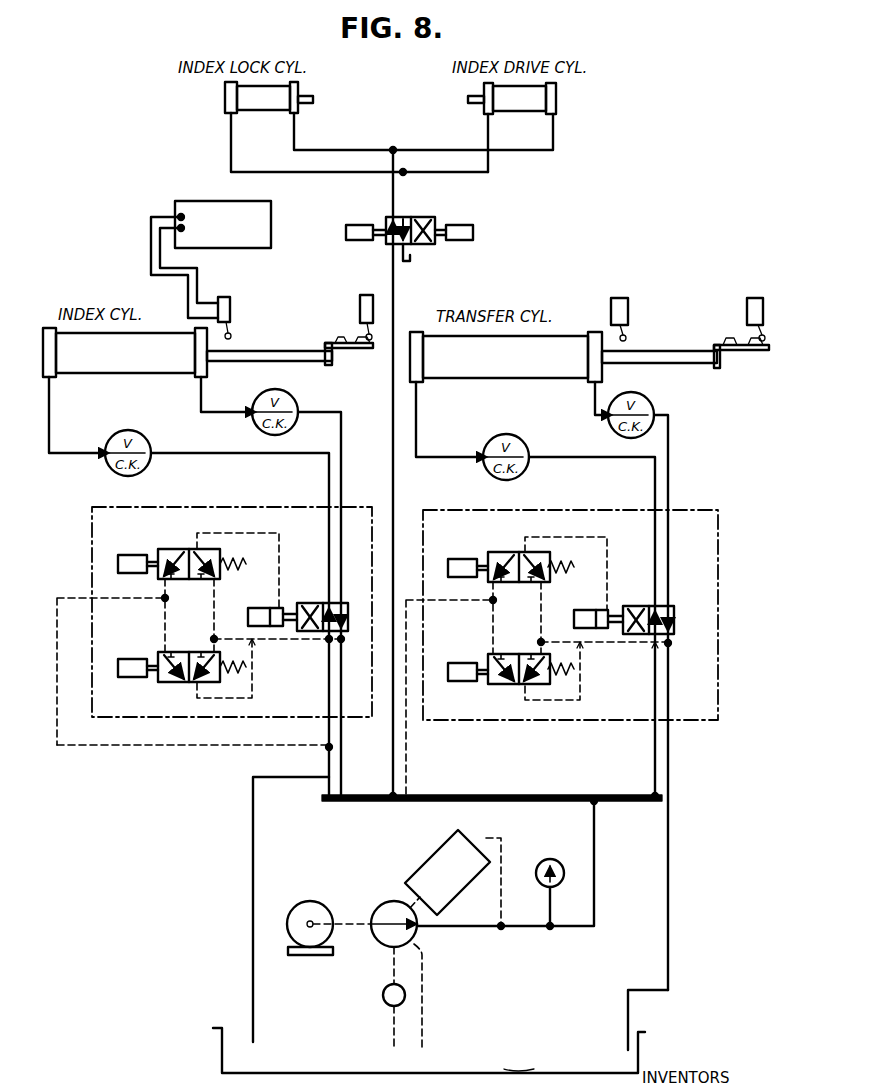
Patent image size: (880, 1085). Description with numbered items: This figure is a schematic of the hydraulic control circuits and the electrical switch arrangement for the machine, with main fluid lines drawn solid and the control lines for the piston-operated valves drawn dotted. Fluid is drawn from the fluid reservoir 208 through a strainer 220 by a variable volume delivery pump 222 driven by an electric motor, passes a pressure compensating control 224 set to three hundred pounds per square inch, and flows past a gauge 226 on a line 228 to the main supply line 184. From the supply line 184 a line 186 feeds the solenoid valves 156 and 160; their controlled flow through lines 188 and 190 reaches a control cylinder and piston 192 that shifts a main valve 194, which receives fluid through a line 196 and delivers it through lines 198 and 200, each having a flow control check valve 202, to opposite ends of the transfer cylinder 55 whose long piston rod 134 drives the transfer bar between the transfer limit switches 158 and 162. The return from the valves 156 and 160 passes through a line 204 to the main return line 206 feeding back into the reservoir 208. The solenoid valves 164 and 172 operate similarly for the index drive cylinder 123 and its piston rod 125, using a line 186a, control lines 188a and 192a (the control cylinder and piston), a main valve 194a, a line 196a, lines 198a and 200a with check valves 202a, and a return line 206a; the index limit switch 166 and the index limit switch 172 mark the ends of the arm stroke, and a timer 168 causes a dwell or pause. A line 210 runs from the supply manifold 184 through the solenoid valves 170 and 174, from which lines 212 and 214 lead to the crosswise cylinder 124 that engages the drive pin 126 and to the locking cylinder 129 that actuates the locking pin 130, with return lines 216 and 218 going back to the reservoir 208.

The hydraulic transfer cylinder 55 is at (504, 378).
The index drive cylinder 123 is at (92, 373).
The hydraulic piston and cylinder 124 is at (535, 114).
The piston rod 125 is at (267, 352).
The drive pin 126 is at (466, 100).
The locking cylinder 129 is at (222, 97).
The locking pin 130 is at (313, 99).
The piston rod 134 is at (659, 350).
The solenoid valve 156 is at (499, 686).
The transfer limit switch 158 is at (624, 307).
The solenoid valve 160 is at (493, 552).
The transfer limit switch 162 is at (754, 307).
The solenoid valve 164 is at (163, 686).
The index limit switch 166 is at (237, 306).
The timer 168 is at (198, 186).
The solenoid valve 170 is at (420, 216).
The solenoid valve / index limit switch 172 is at (164, 548).
The solenoid valve 174 is at (388, 217).
The main supply line 184 is at (507, 794).
The line 186 is at (493, 633).
The line 186a is at (80, 588).
The line 188 is at (580, 680).
The line 188a is at (248, 673).
The line 190 is at (607, 572).
The control cylinder and piston 192 is at (595, 608).
The control cylinder and piston 192a is at (264, 606).
The main valve 194 is at (640, 603).
The main valve 194a is at (320, 600).
The line 196 is at (655, 740).
The line 196a is at (329, 698).
The line 198 is at (416, 420).
The line 198a is at (226, 455).
The line 200 is at (668, 438).
The line 200a is at (343, 442).
The flow control check valve 202 is at (526, 433).
The flow control check valve 202a is at (151, 440).
The line 204 is at (653, 664).
The main return line 206 is at (668, 758).
The return line 206a is at (253, 823).
The fluid reservoir 208 is at (412, 264).
The line 210 is at (393, 482).
The line 212 is at (433, 150).
The line 214 is at (335, 150).
The return line 216 is at (470, 172).
The return line 218 is at (290, 172).
The strainer 220 is at (384, 1006).
The variable volume delivery pump 222 is at (388, 903).
The pressure compensating control 224 is at (418, 853).
The gauge 226 is at (550, 858).
The line 228 is at (594, 880).